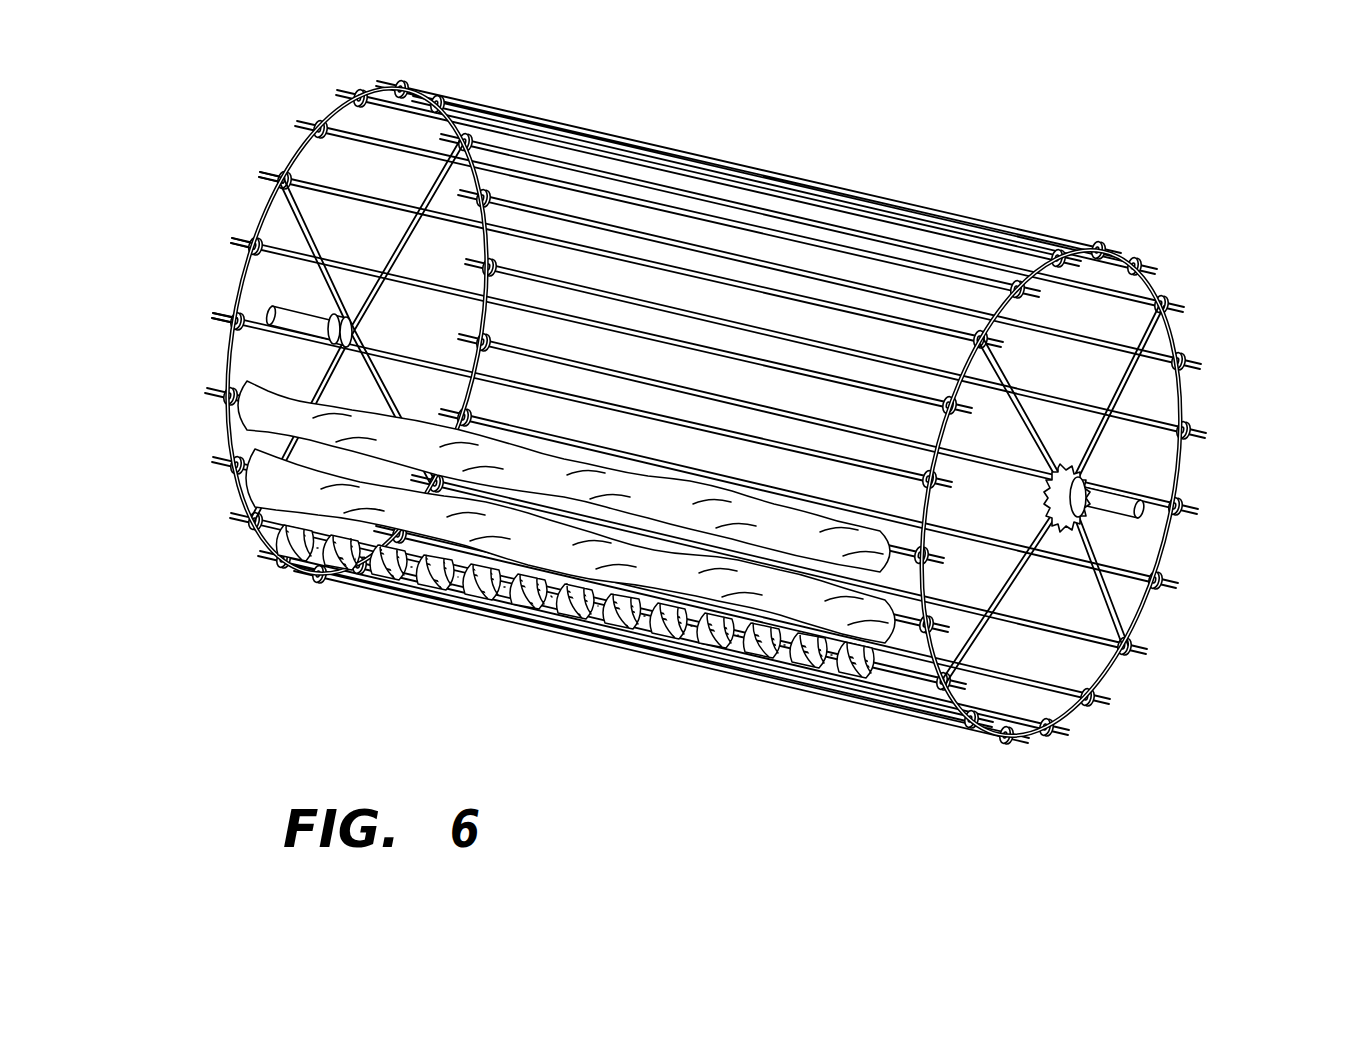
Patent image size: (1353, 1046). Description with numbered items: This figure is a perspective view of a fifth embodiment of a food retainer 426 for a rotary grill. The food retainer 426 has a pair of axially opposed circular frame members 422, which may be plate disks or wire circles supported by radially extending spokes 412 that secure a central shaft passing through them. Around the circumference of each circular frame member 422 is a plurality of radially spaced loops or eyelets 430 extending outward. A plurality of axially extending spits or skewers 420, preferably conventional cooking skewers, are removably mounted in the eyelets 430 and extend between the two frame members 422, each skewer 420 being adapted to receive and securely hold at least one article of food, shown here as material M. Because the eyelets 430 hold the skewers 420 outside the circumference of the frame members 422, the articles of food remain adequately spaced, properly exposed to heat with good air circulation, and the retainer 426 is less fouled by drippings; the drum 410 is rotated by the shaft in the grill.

The food retainer 426 is at (699, 413).
The rotary drum 410 is at (688, 413).
The radially extending spokes 412 is at (1174, 462).
The circular frame members 422 is at (268, 210).
The skewers 420 is at (228, 468).
The eyelets 430 is at (222, 390).
The material M is at (280, 547).